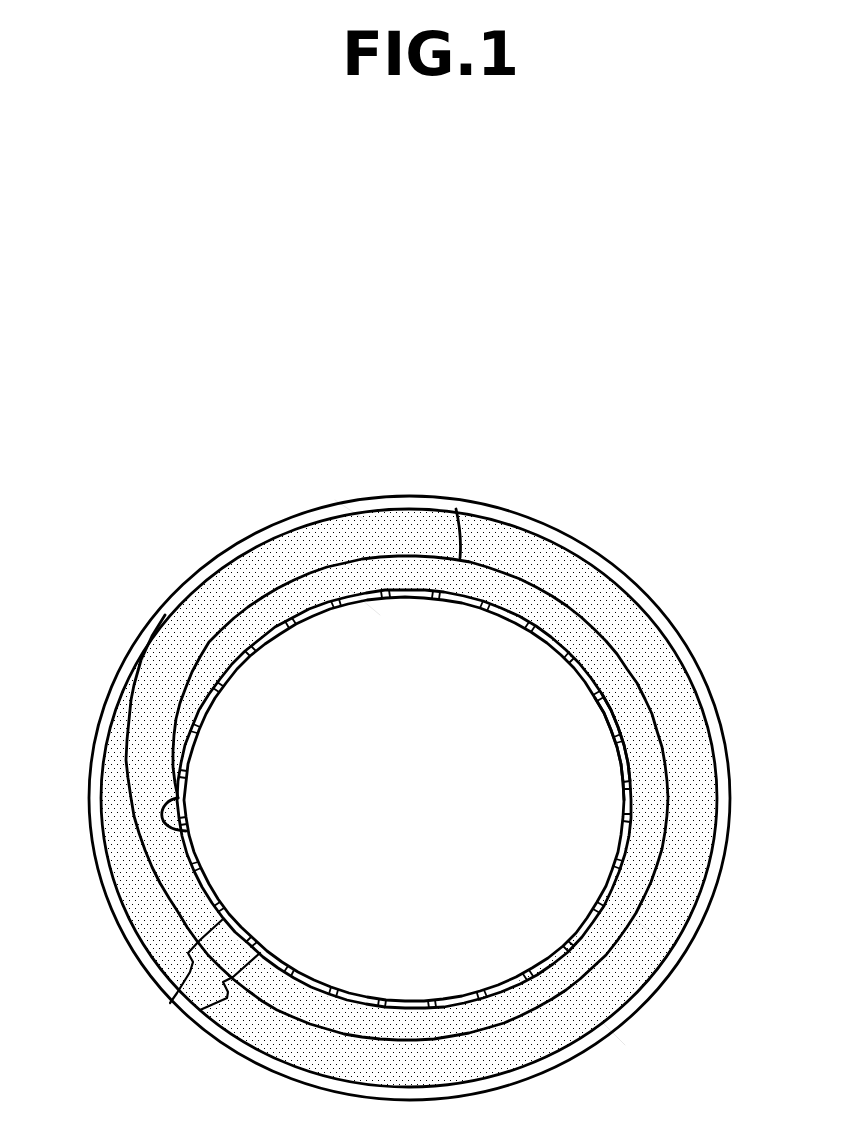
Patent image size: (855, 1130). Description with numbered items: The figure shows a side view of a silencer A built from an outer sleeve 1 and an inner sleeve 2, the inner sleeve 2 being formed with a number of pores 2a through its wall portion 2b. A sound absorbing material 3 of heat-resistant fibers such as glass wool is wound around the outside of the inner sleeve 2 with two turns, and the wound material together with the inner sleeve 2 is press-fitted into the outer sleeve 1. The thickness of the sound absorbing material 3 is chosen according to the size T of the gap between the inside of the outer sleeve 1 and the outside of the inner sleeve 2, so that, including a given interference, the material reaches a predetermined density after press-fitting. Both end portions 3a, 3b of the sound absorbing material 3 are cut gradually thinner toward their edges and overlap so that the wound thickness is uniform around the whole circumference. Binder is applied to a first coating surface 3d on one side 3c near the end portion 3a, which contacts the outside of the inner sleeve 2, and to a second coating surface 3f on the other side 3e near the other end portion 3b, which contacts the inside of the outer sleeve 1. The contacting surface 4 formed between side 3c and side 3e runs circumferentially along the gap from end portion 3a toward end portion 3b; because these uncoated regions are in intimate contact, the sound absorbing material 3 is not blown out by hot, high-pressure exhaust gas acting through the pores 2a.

The outer sleeve 1 is at (678, 632).
The inner sleeve 2 is at (393, 1003).
The pores 2a is at (596, 706).
The wall portion 2b is at (598, 705).
The sound absorbing material 3 is at (717, 803).
The end portion 3a is at (193, 833).
The end portion 3b is at (126, 684).
The one side 3c is at (577, 619).
The first coating surface 3d is at (470, 608).
The other side 3e is at (646, 930).
The second coating surface 3f is at (613, 1033).
The contacting surface 4 is at (456, 509).
The size of gap T is at (348, 506).
The silencer A is at (563, 510).